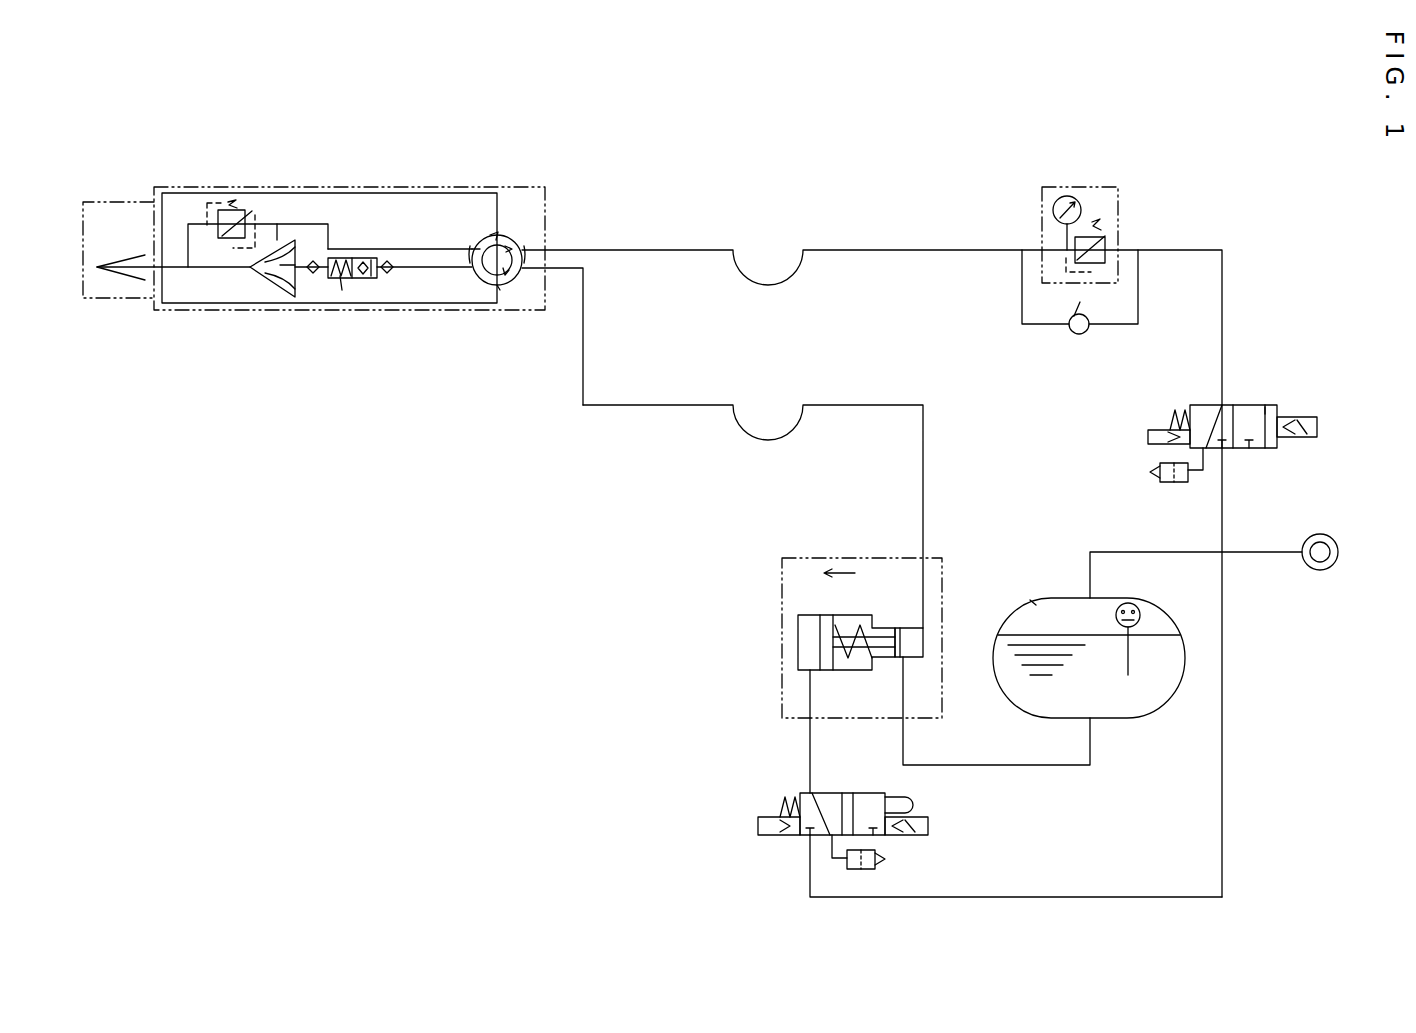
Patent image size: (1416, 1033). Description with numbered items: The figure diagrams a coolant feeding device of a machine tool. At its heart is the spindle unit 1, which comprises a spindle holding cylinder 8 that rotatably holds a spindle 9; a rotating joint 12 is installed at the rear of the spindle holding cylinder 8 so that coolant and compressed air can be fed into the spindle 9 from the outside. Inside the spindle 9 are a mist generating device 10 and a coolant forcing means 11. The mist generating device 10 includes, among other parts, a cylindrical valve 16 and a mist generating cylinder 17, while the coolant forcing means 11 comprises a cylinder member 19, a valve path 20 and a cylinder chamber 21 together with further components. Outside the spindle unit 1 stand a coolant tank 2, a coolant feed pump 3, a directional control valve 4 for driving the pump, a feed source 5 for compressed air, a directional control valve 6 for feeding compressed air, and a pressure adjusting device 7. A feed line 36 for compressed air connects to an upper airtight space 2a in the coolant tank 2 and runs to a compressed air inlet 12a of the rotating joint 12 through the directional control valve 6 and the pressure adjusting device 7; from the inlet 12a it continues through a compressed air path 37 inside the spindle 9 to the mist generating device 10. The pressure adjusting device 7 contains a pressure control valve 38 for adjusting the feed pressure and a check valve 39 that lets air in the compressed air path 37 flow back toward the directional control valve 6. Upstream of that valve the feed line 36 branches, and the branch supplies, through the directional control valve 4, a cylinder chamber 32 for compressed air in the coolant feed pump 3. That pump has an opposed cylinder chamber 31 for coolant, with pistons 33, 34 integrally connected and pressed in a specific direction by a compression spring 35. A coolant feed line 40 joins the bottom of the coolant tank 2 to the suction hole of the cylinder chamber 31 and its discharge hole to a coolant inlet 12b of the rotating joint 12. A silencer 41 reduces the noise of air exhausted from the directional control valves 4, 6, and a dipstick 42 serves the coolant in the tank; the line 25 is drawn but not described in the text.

The spindle unit 1 is at (302, 145).
The coolant tank 2 is at (1143, 725).
The upper airtight space 2a is at (1046, 612).
The coolant feed pump 3 is at (765, 655).
The directional control valve for driving the pump 4 is at (745, 838).
The feed source for compressed air 5 is at (1318, 572).
The directional control valve for feeding compressed air 6 is at (1130, 445).
The pressure adjusting device 7 is at (1012, 330).
The spindle holding cylinder 8 is at (445, 187).
The spindle 9 is at (351, 192).
The mist generating device 10 is at (275, 310).
The coolant forcing means 11 is at (358, 282).
The rotating joint 12 is at (510, 235).
The compressed air inlet 12a is at (522, 250).
The coolant inlet 12b is at (503, 290).
The cylindrical valve 16 is at (247, 217).
The mist generating cylinder 17 is at (262, 282).
The cylinder member 19 is at (132, 200).
The valve path 20 is at (313, 280).
The cylinder chamber 21 is at (341, 292).
The low pressure passage 25 is at (425, 270).
The cylinder chamber for coolant 31 is at (918, 658).
The cylinder chamber for compressed air 32 is at (800, 625).
The piston 33 is at (897, 660).
The piston 34 is at (828, 668).
The compression spring 35 is at (852, 632).
The feed line for compressed air 36 is at (855, 248).
The compressed air path 37 is at (426, 246).
The pressure control valve 38 is at (1105, 225).
The check valve 39 is at (1076, 336).
The coolant feed line 40 is at (680, 410).
The silencer 41 is at (1168, 486).
The dipstick 42 is at (1140, 610).